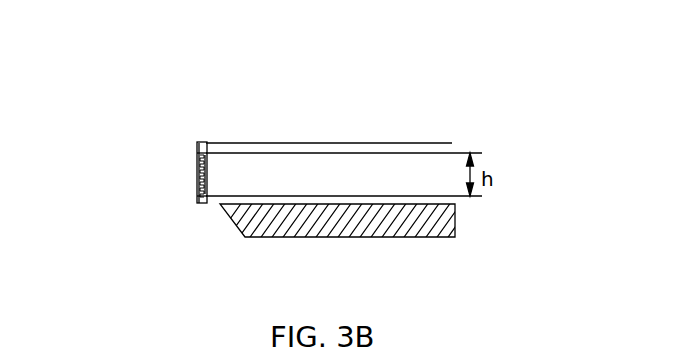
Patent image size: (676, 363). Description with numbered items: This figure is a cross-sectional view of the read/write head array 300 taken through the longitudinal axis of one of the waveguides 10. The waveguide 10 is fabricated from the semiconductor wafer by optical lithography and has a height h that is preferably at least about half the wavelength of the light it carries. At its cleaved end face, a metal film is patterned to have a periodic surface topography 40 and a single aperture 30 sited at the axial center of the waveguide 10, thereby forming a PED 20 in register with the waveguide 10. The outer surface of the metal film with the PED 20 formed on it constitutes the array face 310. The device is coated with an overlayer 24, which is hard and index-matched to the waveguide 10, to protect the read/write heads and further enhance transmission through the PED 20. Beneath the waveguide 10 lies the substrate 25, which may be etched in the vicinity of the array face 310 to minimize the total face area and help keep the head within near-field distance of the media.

The read/write head array 300 is at (314, 124).
The waveguide 10 is at (392, 173).
The PED 20 is at (203, 142).
The periodic surface topography 40 is at (197, 148).
The aperture 30 is at (197, 173).
The array face 310 is at (196, 185).
The overlayer 24 is at (197, 197).
The substrate 25 is at (380, 227).